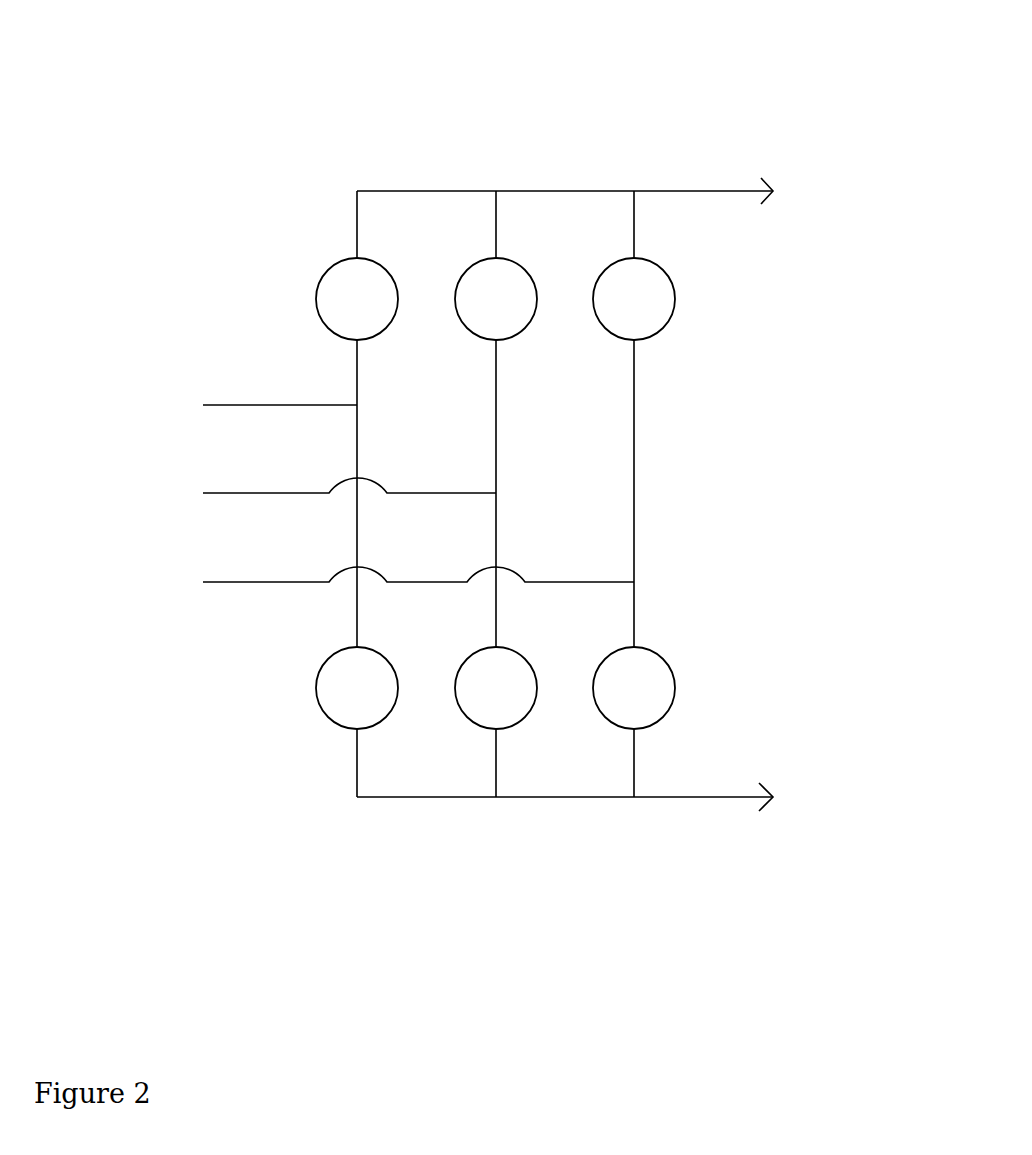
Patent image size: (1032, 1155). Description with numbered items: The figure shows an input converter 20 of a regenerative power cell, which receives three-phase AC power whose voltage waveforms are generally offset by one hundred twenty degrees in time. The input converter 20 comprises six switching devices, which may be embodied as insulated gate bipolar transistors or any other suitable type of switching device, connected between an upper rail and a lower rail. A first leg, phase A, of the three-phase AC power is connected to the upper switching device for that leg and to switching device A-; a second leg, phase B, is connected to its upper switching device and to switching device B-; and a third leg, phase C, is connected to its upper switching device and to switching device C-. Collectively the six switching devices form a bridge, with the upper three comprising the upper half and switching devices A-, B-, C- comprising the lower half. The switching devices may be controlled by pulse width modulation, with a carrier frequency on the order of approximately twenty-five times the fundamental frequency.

The input converter 20 is at (529, 415).
The phase A is at (265, 405).
The phase B is at (335, 491).
The phase C is at (404, 580).
The switching device A- is at (357, 688).
The switching device B- is at (496, 688).
The switching device C- is at (634, 688).